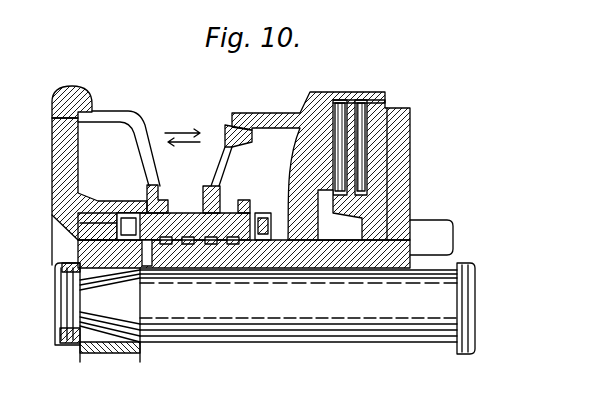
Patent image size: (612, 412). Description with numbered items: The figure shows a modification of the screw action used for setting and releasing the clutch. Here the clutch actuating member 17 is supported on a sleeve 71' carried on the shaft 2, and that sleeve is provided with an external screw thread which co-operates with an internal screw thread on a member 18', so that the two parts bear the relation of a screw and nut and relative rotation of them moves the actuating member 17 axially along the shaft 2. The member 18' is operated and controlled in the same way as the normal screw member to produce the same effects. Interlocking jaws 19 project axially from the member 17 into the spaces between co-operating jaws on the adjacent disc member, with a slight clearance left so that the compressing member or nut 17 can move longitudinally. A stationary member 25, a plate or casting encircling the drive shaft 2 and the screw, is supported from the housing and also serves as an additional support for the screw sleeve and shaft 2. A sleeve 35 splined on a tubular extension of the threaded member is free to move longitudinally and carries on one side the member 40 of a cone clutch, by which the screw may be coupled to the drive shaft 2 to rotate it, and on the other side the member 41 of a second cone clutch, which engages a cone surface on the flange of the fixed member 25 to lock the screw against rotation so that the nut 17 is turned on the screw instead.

The shaft 2 is at (265, 312).
The clutch actuating member 17 is at (403, 167).
The internally threaded member 18' is at (123, 162).
The interlocking jaws 19 is at (445, 238).
The stationary member 25 is at (310, 93).
The sleeve 35 is at (203, 197).
The cone clutch member 40 is at (88, 101).
The cone clutch member 41 is at (224, 125).
The sleeve 71' is at (244, 311).